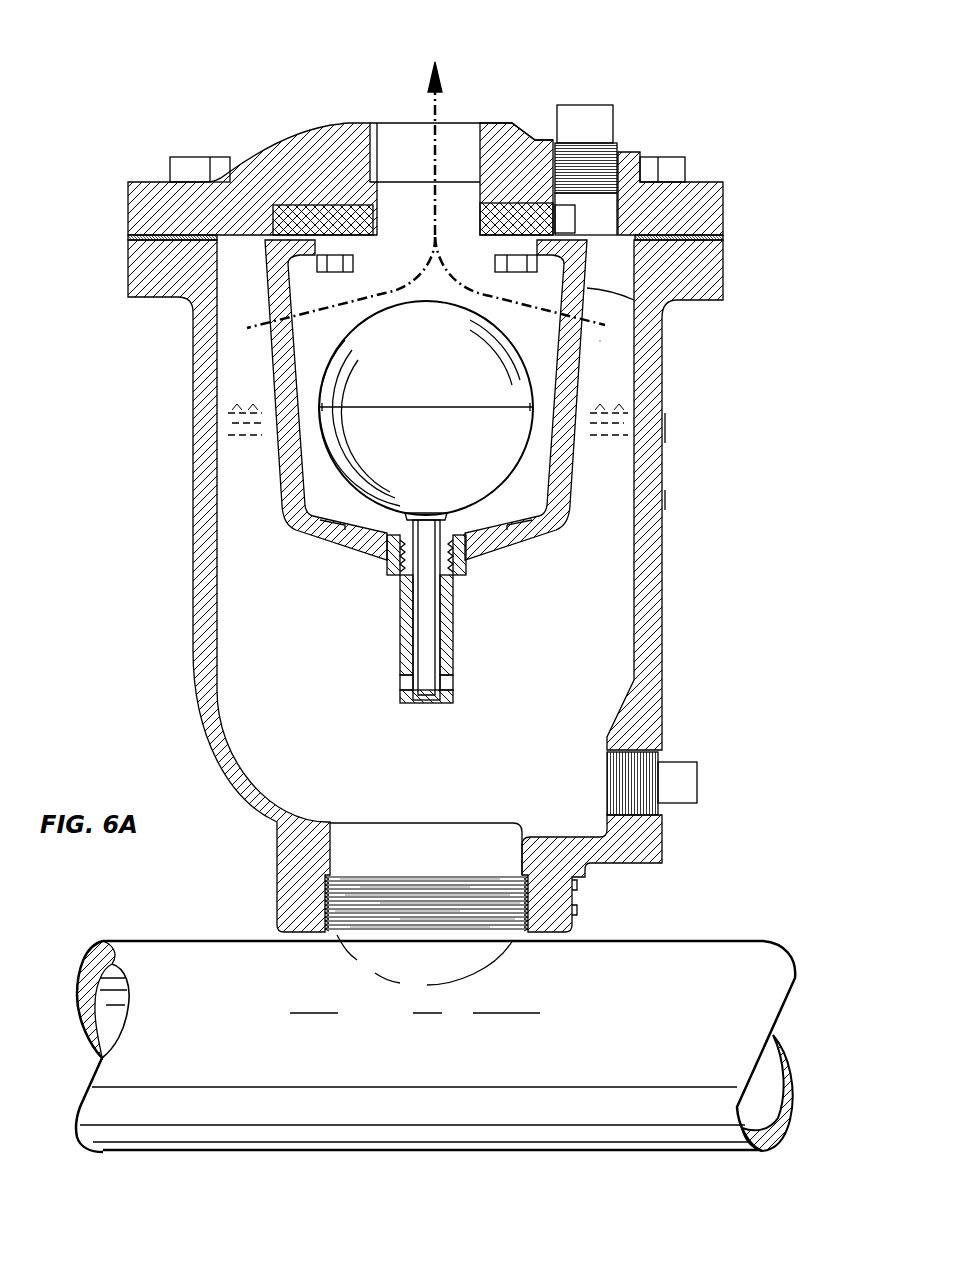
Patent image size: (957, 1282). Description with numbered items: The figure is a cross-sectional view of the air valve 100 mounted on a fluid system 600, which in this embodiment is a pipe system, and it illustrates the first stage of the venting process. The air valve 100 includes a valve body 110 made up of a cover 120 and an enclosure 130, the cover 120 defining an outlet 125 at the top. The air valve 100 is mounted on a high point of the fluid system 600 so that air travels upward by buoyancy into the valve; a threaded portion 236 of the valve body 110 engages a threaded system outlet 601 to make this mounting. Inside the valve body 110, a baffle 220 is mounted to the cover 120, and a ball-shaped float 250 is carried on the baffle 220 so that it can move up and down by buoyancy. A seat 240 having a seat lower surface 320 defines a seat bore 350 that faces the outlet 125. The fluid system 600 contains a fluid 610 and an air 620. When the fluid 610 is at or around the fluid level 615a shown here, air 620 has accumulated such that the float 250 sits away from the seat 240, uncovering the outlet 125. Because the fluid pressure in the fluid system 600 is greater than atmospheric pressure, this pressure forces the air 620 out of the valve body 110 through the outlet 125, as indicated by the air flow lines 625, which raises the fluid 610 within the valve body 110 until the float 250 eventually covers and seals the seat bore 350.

The air valve 100 is at (250, 153).
The valve body 110 is at (431, 586).
The cover 120 is at (503, 157).
The outlet 125 is at (458, 123).
The enclosure 130 is at (190, 468).
The baffle 220 is at (590, 287).
The threaded portion 236 is at (327, 903).
The seat 240 is at (322, 218).
The float 250 is at (320, 405).
The seat lower surface 320 is at (345, 241).
The seat bore 350 is at (373, 218).
The fluid system 600 is at (78, 1088).
The threaded system outlet 601 is at (343, 928).
The fluid 610 is at (615, 533).
The fluid level 615a is at (632, 407).
The air 620 is at (615, 358).
The air flow lines 625 is at (440, 95).